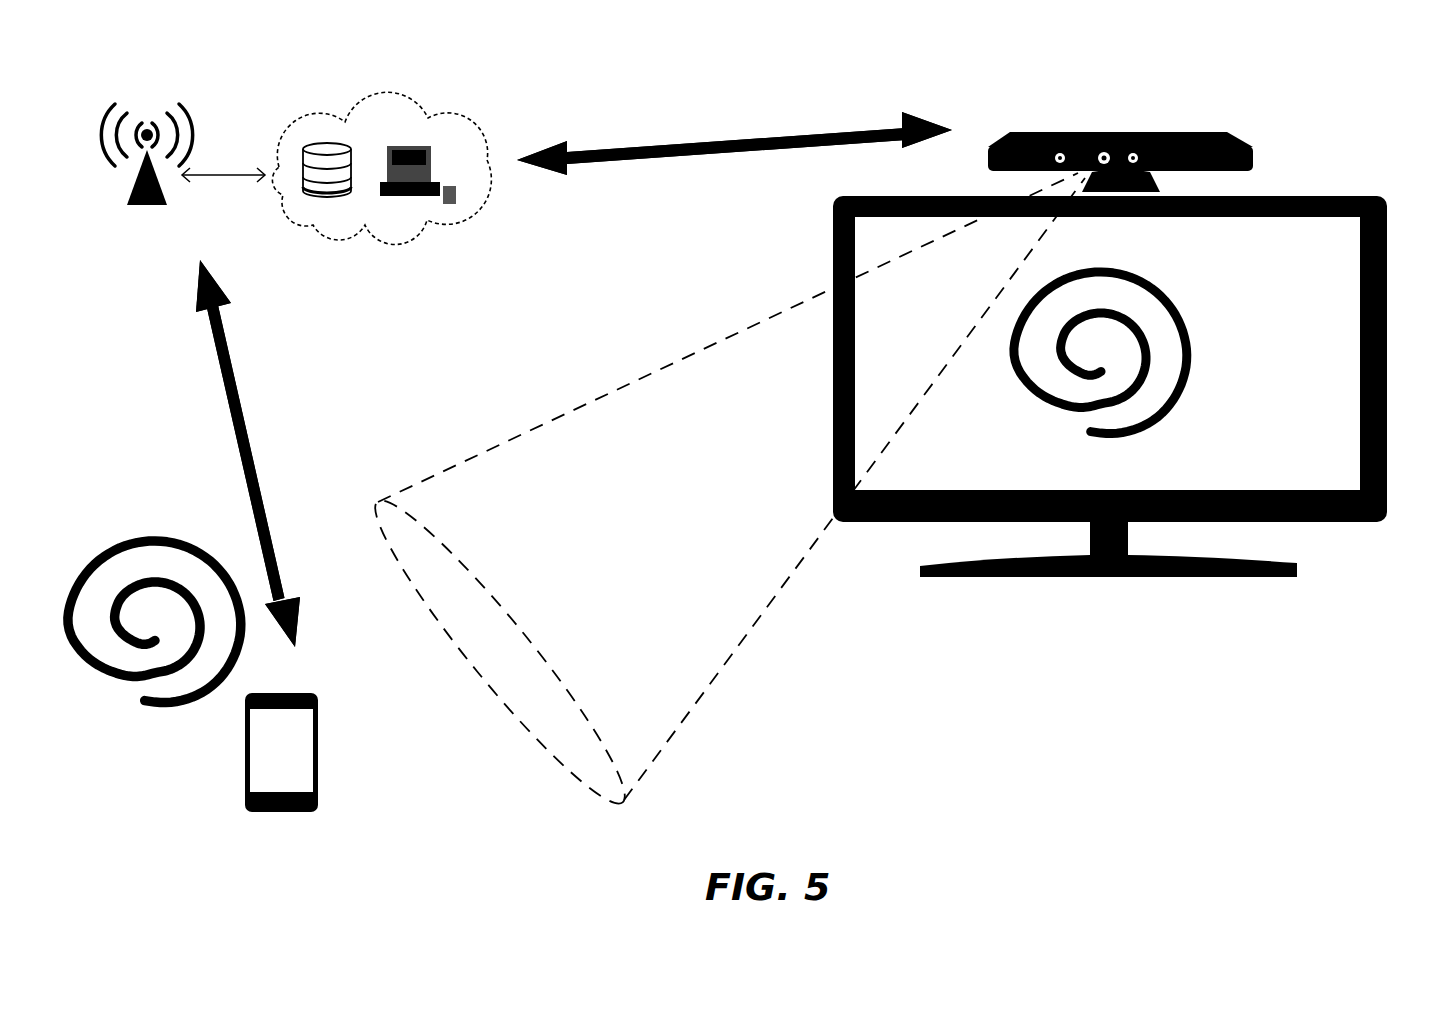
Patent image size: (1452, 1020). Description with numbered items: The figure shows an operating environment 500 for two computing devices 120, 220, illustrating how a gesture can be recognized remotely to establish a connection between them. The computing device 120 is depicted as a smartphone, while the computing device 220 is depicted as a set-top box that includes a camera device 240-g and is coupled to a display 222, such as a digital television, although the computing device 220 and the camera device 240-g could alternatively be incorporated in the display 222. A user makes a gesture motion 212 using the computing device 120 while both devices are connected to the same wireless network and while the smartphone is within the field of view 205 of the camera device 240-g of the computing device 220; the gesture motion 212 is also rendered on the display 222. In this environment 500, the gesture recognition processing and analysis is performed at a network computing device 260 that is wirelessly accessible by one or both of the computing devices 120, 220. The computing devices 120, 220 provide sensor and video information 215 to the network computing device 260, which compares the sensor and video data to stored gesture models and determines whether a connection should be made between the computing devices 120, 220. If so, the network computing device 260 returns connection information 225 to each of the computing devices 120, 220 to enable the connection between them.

The operating environment 500 is at (802, 82).
The network computing device 260 is at (376, 132).
The sensor and video information 215 is at (574, 379).
The connection information 225 is at (574, 379).
The computing device 220 is at (1208, 128).
The camera device 240-g is at (1102, 130).
The display 222 is at (1343, 197).
The gesture motion 212 is at (1180, 410).
The field of view 205 is at (727, 652).
The computing device 120 is at (237, 818).